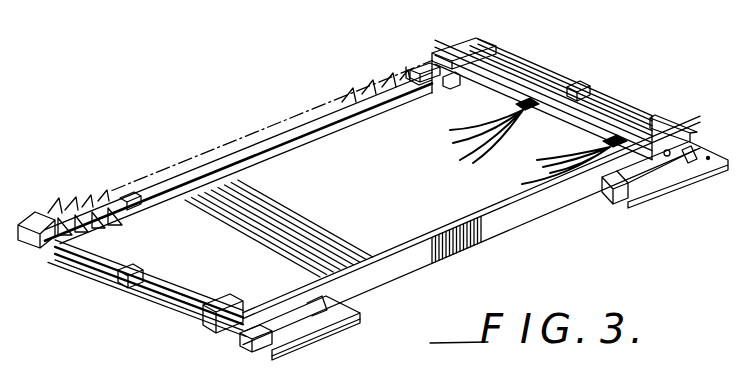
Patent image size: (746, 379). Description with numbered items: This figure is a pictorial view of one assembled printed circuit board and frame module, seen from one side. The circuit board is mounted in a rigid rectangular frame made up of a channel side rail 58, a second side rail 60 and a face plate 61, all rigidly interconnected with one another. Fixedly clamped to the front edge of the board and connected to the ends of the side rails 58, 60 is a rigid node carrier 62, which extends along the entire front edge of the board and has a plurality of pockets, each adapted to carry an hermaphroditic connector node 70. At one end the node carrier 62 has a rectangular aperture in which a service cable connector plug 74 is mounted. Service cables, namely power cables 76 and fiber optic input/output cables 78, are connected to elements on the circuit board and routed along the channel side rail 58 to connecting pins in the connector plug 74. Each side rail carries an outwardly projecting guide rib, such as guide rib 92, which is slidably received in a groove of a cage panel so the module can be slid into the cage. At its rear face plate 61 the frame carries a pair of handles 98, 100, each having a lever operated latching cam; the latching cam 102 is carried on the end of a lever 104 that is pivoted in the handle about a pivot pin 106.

The channel side rail 58 is at (560, 82).
The second side rail 60 is at (156, 309).
The face plate 61 is at (503, 230).
The node carrier 62 is at (160, 146).
The hermaphroditic connector node 70 is at (108, 189).
The service cable connector plug 74 is at (432, 52).
The power cables 76 is at (517, 174).
The fiber optic input/output cables 78 is at (460, 156).
The guide rib 92 is at (114, 292).
The handle 98 is at (331, 340).
The handle 100 is at (667, 200).
The latching cam 102 is at (250, 352).
The lever 104 is at (301, 349).
The pivot pin 106 is at (271, 334).